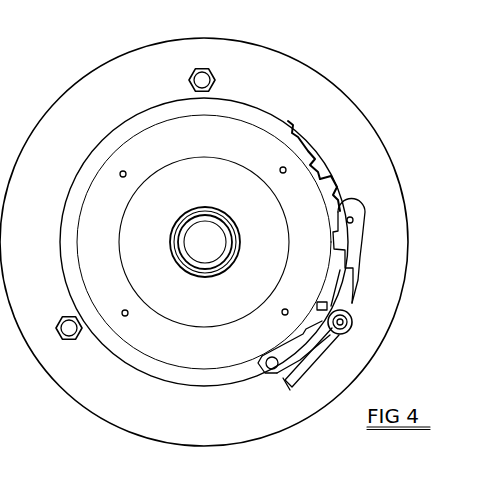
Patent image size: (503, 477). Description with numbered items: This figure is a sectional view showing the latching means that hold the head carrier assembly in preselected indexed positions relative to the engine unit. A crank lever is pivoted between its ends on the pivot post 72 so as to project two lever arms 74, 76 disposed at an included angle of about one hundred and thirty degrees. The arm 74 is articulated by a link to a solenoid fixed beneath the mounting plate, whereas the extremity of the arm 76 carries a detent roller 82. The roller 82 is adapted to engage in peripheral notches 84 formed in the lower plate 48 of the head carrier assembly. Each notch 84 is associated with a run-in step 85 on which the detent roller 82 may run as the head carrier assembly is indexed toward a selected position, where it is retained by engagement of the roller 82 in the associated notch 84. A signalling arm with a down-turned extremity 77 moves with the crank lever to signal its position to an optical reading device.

The lower plate 48 is at (281, 122).
The run-in step 85 is at (310, 147).
The peripheral notches 84 is at (317, 175).
The lever arm 74 is at (354, 232).
The pivot post 72 is at (352, 320).
The detent roller 82 is at (272, 360).
The lever arm 76 is at (270, 381).
The down-turned extremity 77 is at (285, 388).